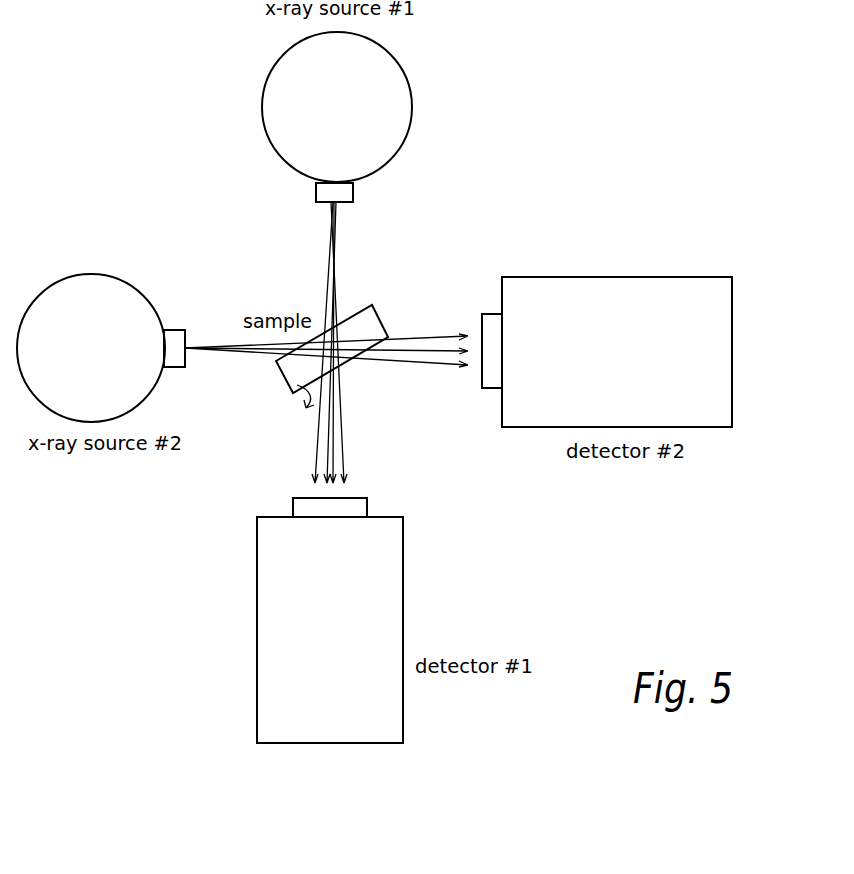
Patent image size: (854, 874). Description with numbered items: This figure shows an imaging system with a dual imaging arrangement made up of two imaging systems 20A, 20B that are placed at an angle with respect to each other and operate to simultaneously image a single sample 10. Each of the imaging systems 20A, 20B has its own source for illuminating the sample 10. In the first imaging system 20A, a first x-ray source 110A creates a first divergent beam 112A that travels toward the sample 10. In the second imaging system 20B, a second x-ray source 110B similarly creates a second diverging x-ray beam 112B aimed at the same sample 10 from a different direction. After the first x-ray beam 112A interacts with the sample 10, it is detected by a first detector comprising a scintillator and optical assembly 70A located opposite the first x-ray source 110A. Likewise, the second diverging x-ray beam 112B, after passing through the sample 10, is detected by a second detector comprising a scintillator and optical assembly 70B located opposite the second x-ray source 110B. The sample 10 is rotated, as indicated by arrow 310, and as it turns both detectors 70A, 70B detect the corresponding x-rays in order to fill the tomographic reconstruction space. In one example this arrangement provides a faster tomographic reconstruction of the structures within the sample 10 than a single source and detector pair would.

The sample 10 is at (378, 321).
The first imaging system 20A is at (438, 140).
The second imaging system 20B is at (515, 464).
The first detector scintillator and optical assembly 70A is at (403, 582).
The second detector scintillator and optical assembly 70B is at (655, 270).
The first x-ray source 110A is at (411, 78).
The second x-ray source 110B is at (150, 395).
The first divergent beam 112A is at (345, 258).
The second diverging x-ray beam 112B is at (395, 363).
The arrow indicating sample rotation 310 is at (300, 393).